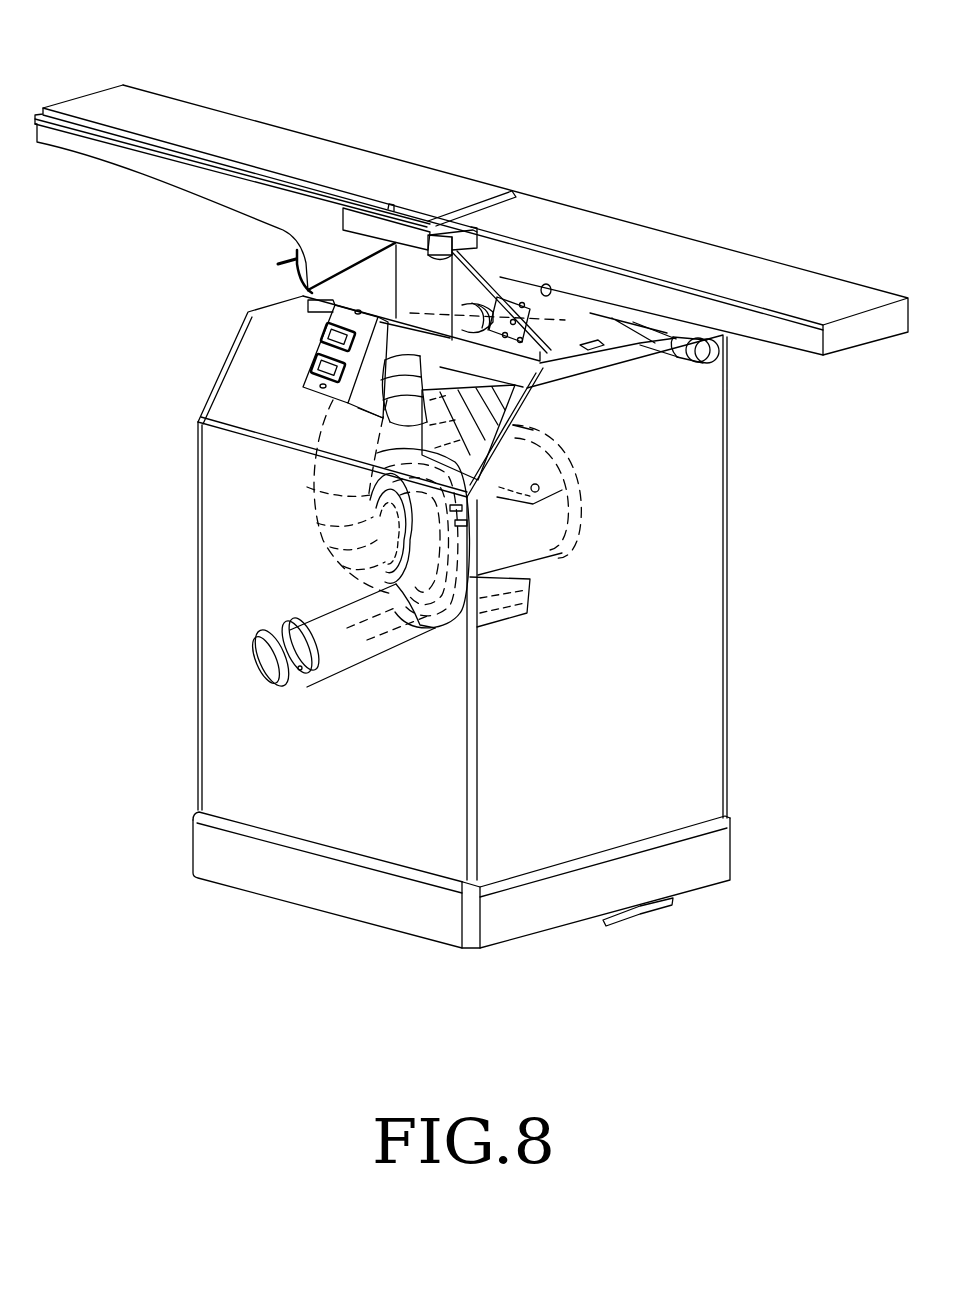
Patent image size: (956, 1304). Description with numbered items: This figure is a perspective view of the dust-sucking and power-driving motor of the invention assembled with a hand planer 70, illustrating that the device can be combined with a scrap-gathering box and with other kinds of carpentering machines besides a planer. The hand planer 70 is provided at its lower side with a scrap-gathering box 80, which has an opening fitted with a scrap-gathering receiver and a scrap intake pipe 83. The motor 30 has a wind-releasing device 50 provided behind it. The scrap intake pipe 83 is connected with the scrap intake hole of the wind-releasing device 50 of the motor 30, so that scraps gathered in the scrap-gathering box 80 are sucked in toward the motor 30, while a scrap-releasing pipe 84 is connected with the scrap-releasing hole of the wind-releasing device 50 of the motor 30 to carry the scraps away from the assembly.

The hand planer 70 is at (348, 163).
The scrap-gathering box 80 is at (693, 643).
The motor 30 is at (590, 528).
The wind-releasing device 50 is at (433, 620).
The scrap intake pipe 83 is at (330, 480).
The scrap-releasing pipe 84 is at (283, 658).